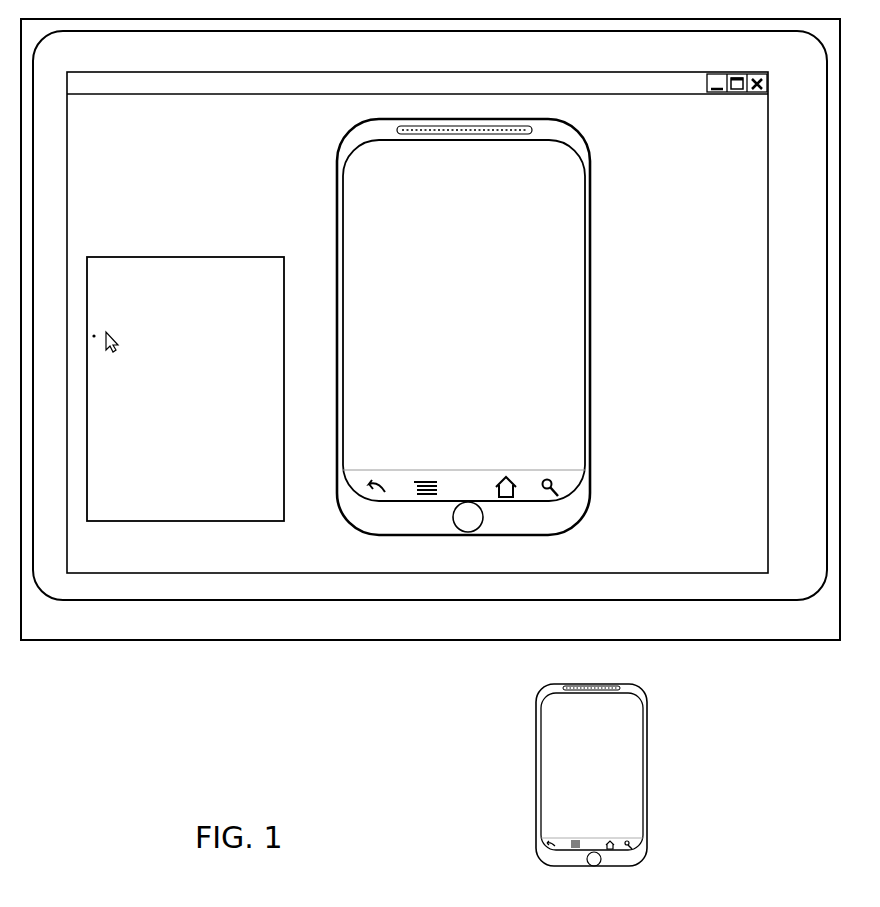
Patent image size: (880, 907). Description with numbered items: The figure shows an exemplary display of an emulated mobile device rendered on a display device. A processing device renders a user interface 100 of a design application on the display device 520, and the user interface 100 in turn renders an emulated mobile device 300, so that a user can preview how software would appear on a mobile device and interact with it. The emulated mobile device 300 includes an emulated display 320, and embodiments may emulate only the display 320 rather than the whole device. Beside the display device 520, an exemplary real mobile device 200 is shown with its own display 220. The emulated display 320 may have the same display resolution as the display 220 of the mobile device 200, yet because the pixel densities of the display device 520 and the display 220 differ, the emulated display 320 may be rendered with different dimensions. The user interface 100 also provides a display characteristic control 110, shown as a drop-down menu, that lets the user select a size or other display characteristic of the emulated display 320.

The user interface 100 is at (695, 573).
The display device 520 is at (643, 640).
The display characteristic control 110 is at (165, 522).
The emulated mobile device 300 is at (496, 412).
The emulated display 320 is at (550, 309).
The mobile device 200 is at (520, 775).
The display 220 is at (563, 787).